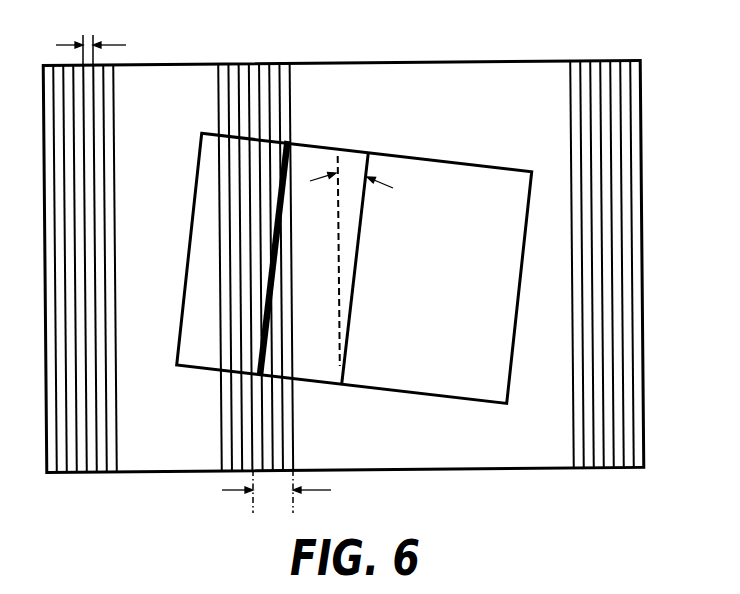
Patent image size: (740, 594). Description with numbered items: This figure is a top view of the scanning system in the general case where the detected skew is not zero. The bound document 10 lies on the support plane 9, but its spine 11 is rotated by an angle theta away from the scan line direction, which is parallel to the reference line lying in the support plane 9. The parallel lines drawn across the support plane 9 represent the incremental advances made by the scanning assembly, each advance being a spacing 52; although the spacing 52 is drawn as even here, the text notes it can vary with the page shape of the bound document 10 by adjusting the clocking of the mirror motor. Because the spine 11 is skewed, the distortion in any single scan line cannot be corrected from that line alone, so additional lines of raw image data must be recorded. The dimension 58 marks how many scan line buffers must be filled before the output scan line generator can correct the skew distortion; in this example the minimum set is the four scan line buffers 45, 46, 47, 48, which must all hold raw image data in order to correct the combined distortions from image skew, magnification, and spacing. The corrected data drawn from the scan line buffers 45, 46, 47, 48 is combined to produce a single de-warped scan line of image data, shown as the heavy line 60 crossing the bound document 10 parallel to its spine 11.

The support plane 9 is at (522, 61).
The bound document 10 is at (487, 166).
The spine 11 is at (352, 310).
The scan line buffer 45 is at (253, 102).
The scan line buffer 46 is at (262, 95).
The scan line buffer 47 is at (270, 77).
The scan line buffer 48 is at (282, 98).
The spacing 52 is at (104, 48).
The number of scan line buffers 58 is at (276, 491).
The de-warped image data scan line 60 is at (267, 267).